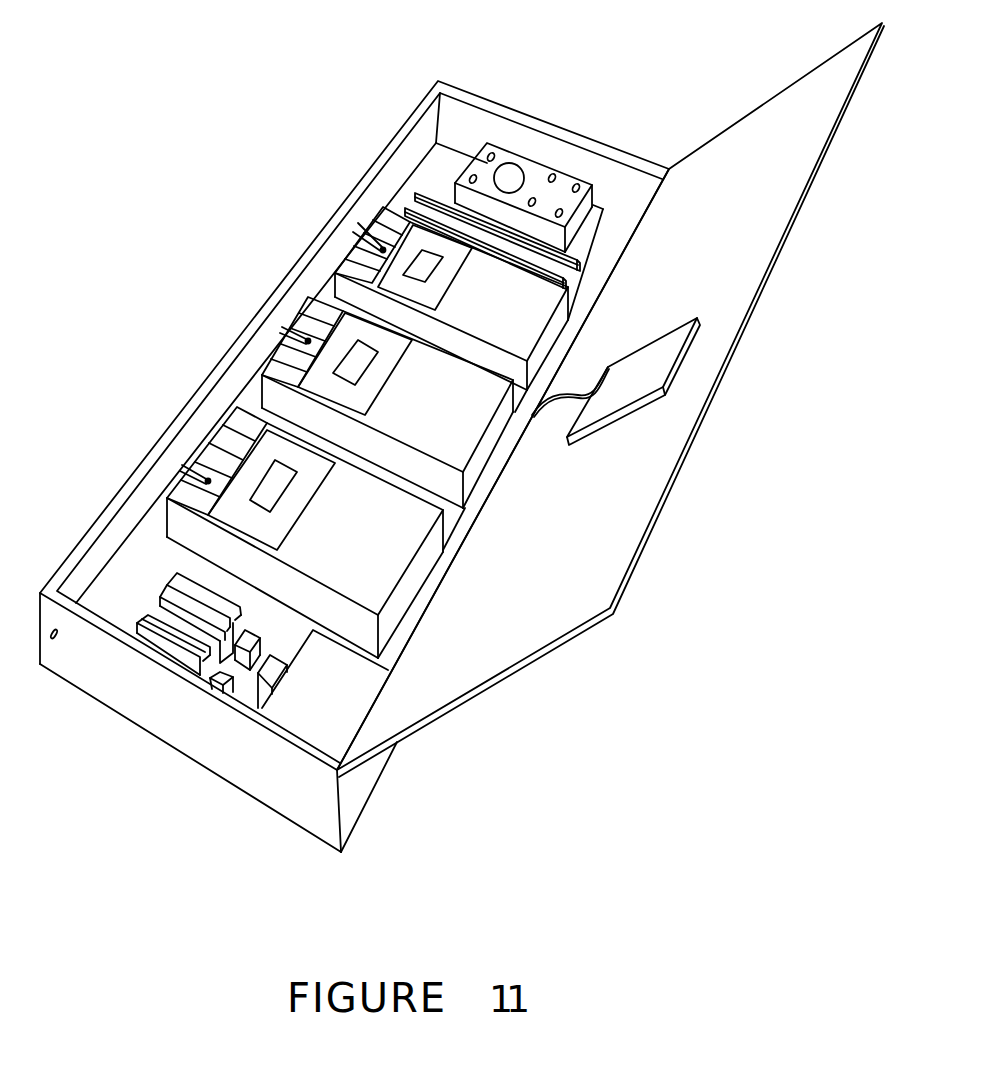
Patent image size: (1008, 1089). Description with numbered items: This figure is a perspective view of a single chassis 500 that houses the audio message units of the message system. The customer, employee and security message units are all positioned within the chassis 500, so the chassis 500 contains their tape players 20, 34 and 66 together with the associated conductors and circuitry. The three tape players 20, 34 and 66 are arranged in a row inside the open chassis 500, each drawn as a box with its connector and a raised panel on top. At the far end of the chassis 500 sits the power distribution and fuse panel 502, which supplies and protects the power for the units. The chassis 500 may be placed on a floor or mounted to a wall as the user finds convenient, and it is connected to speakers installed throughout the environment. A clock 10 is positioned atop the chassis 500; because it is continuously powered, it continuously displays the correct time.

The clock 10 is at (638, 363).
The tape player 20 is at (305, 532).
The tape player 34 is at (387, 402).
The tape player 66 is at (451, 298).
The chassis 500 is at (606, 294).
The power distribution and fuse panel 502 is at (580, 257).